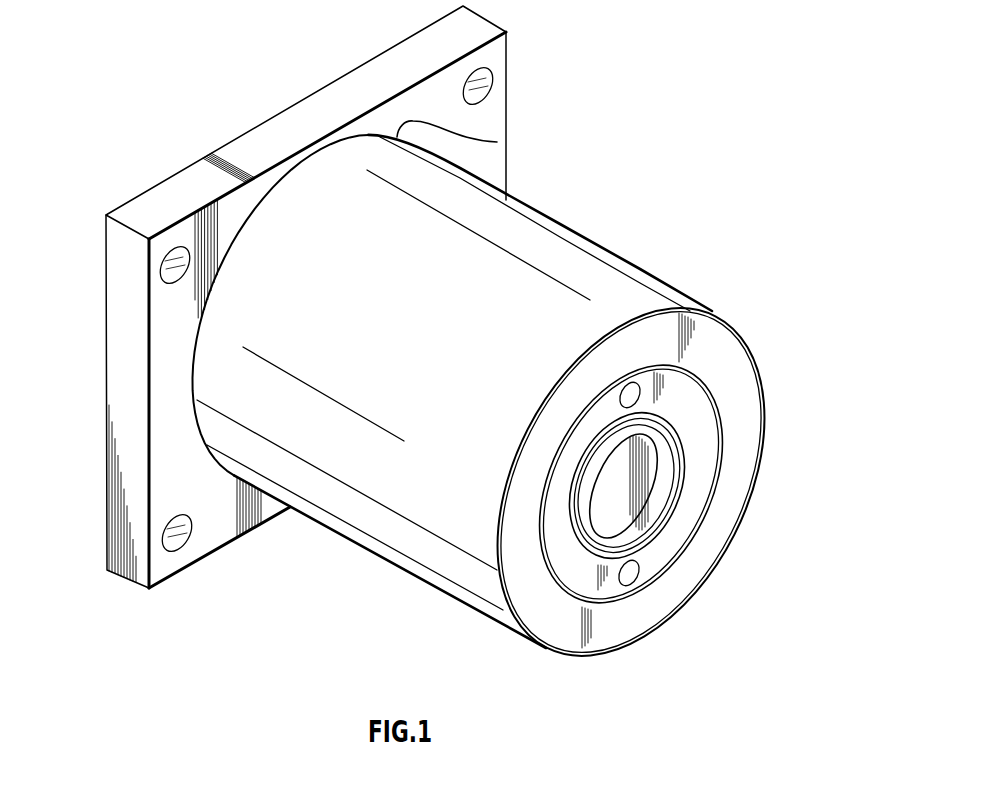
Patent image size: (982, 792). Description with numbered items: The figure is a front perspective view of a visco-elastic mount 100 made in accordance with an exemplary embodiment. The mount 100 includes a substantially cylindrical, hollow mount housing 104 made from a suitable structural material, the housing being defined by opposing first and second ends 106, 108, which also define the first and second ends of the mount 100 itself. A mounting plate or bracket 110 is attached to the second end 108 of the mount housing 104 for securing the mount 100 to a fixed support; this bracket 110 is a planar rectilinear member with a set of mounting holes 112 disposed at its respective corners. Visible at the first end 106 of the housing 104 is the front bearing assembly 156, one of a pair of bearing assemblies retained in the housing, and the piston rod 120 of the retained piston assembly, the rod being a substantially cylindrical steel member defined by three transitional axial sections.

The visco-elastic mount 100 is at (728, 48).
The mount housing 104 is at (588, 263).
The first end 106 is at (688, 309).
The second end 108 is at (497, 142).
The mounting plate or bracket 110 is at (383, 75).
The mounting holes 112 is at (490, 90).
The piston rod 120 is at (657, 475).
The front bearing assembly 156 is at (703, 423).